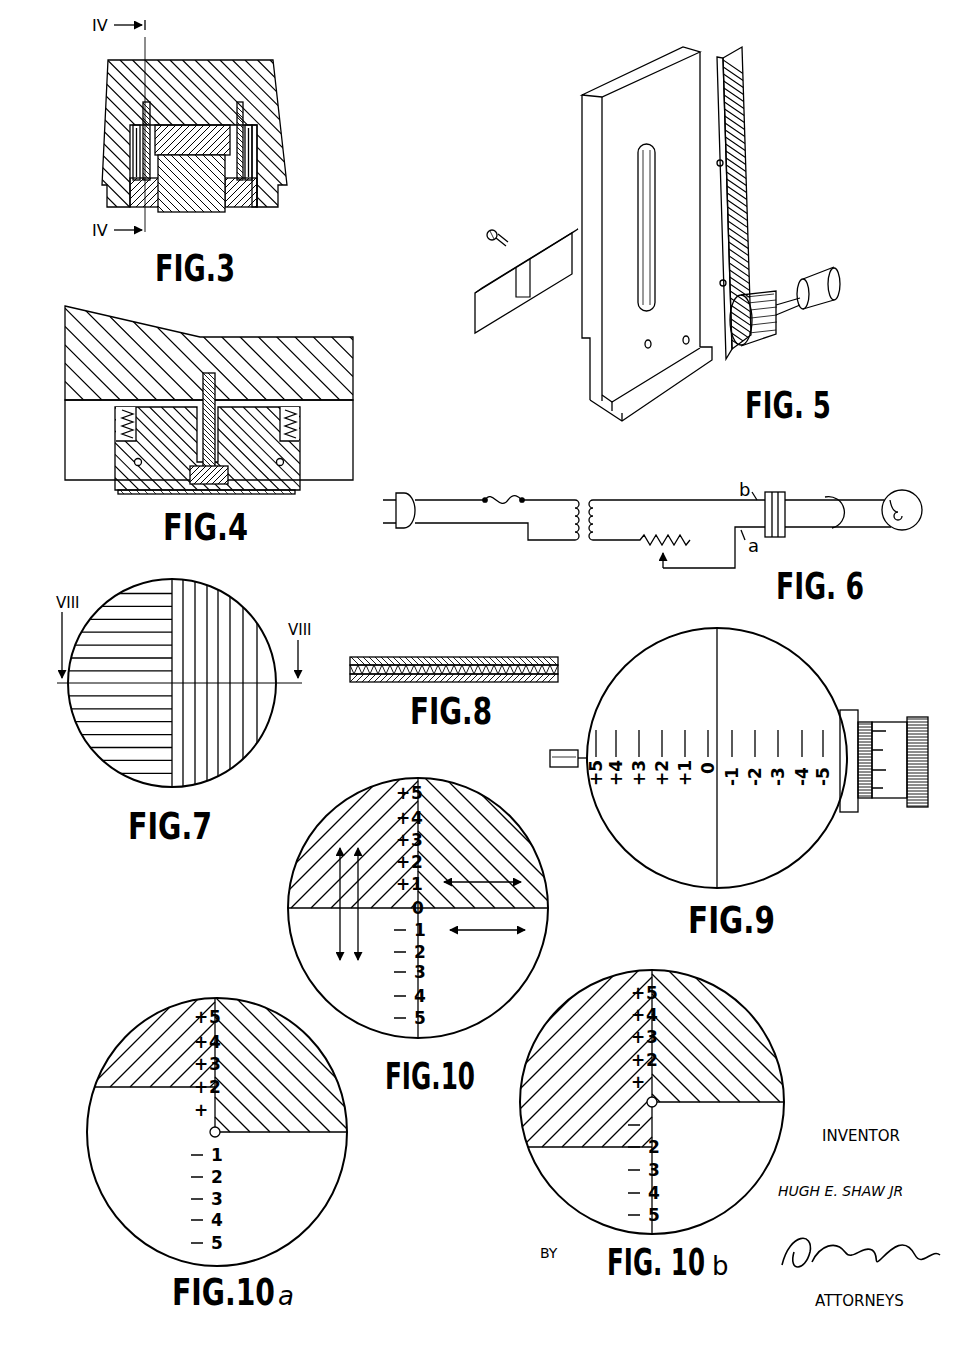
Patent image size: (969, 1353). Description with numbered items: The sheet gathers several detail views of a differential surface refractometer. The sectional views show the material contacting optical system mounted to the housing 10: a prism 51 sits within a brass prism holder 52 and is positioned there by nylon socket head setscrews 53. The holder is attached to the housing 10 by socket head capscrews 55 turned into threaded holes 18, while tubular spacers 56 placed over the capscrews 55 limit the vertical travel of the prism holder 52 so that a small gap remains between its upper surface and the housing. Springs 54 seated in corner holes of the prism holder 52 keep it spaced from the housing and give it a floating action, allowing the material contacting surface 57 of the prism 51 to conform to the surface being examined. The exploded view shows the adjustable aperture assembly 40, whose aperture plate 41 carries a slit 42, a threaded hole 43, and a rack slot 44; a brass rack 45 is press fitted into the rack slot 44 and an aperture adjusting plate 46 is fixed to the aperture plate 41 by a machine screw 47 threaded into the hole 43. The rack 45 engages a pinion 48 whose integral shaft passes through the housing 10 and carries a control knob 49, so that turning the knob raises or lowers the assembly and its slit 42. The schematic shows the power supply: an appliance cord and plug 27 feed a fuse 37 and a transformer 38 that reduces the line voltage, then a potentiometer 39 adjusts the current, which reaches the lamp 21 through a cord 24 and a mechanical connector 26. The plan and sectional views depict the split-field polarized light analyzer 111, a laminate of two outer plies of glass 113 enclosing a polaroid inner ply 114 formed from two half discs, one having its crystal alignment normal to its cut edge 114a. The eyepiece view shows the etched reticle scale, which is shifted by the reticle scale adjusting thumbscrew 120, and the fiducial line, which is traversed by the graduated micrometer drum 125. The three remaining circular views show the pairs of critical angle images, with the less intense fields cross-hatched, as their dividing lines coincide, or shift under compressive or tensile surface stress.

In FIG. 3, the housing 10 is at (273, 101).
In FIG. 4, the housing 10 is at (312, 346).
In FIG. 3, the threaded holes 18 is at (142, 112).
In FIG. 6, the lamp 21 is at (904, 490).
In FIG. 6, the cord 24 is at (828, 498).
In FIG. 6, the mechanical connector 26 is at (776, 492).
In FIG. 6, the appliance cord and plug 27 is at (442, 522).
In FIG. 6, the fuse 37 is at (520, 499).
In FIG. 6, the transformer 38 is at (583, 504).
In FIG. 6, the potentiometer 39 is at (663, 568).
In FIG. 5, the adjustable aperture assembly 40 is at (673, 234).
In FIG. 5, the aperture plate 41 is at (582, 131).
In FIG. 5, the slit 42 is at (620, 376).
In FIG. 5, the threaded hole 43 is at (645, 344).
In FIG. 5, the rack slot 44 is at (640, 232).
In FIG. 5, the rack 45 is at (752, 214).
In FIG. 5, the aperture adjusting plate 46 is at (545, 250).
In FIG. 5, the machine screw 47 is at (500, 222).
In FIG. 5, the pinion 48 is at (772, 328).
In FIG. 5, the control knob 49 is at (828, 298).
In FIG. 3, the prism 51 is at (185, 200).
In FIG. 3, the prism holder 52 is at (195, 140).
In FIG. 4, the prism holder 52 is at (120, 478).
In FIG. 4, the setscrews 53 is at (134, 462).
In FIG. 4, the springs 54 is at (123, 425).
In FIG. 3, the capscrews 55 is at (258, 202).
In FIG. 4, the capscrews 55 is at (197, 472).
In FIG. 3, the spacers 56 is at (133, 162).
In FIG. 4, the spacers 56 is at (215, 406).
In FIG. 3, the material contacting surface 57 is at (210, 208).
In FIG. 4, the material contacting surface 57 is at (274, 494).
In FIG. 8, the split-field polarized light analyzer 111 is at (454, 668).
In FIG. 8, the outer plies of glass 113 is at (350, 670).
In FIG. 8, the polaroid inner ply 114 is at (560, 670).
In FIG. 8, the cut edge 114a is at (378, 678).
In FIG. 9, the reticle scale adjusting thumbscrew 120 is at (566, 768).
In FIG. 9, the graduated micrometer drum 125 is at (915, 717).